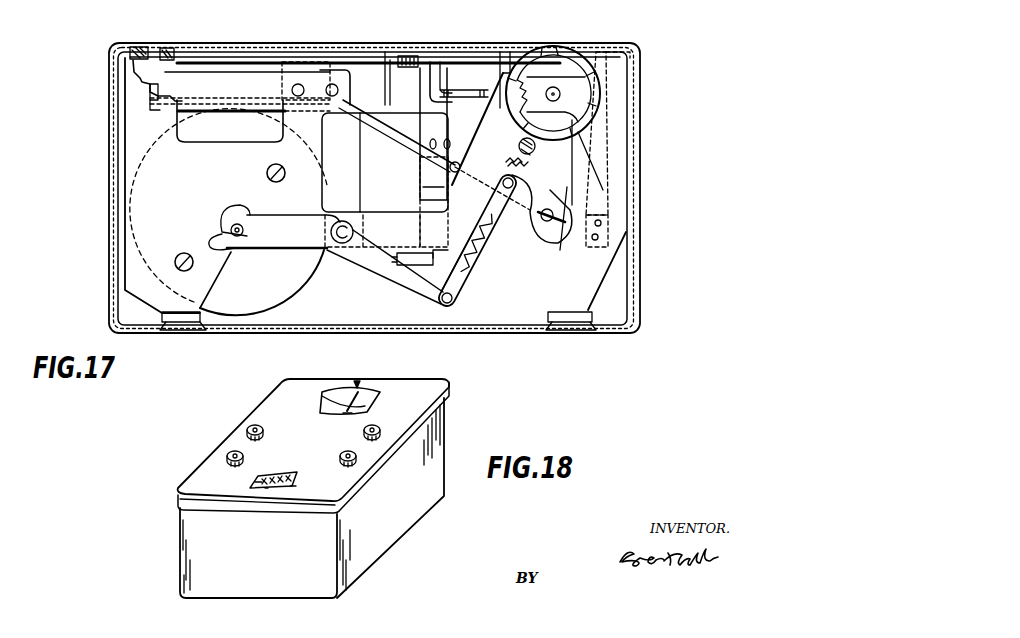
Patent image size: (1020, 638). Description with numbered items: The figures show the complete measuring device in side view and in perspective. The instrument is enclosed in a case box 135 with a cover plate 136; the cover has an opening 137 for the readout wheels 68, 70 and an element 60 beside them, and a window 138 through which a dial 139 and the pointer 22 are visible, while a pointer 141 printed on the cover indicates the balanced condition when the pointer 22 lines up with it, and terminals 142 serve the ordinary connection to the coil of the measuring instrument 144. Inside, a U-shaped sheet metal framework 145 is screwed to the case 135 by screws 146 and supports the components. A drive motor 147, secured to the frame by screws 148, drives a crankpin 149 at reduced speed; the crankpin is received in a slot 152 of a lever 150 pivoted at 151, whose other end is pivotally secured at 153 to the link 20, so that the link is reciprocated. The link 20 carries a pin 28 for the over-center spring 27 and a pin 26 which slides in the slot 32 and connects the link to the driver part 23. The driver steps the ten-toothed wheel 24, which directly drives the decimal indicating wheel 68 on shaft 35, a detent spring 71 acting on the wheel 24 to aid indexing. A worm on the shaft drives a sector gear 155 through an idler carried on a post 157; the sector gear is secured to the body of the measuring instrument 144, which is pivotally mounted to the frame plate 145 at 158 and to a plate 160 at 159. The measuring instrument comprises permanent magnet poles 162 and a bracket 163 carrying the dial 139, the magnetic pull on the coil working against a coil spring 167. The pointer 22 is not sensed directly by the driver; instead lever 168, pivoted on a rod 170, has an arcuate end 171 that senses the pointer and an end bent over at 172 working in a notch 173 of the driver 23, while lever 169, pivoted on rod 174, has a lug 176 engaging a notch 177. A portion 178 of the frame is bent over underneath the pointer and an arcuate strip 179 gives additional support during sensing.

In FIG. 17, the link 20 is at (462, 285).
In FIG. 17, the pointer 22 is at (214, 60).
In FIG. 18, the pointer 22 is at (349, 413).
In FIG. 17, the driver part 23 is at (535, 152).
In FIG. 17, the wheel 24 is at (568, 50).
In FIG. 17, the pin 26 is at (542, 210).
In FIG. 17, the over-center spring 27 is at (491, 234).
In FIG. 17, the pin 28 is at (476, 264).
In FIG. 17, the sensing corner 32 is at (514, 182).
In FIG. 17, the shaft 35 is at (559, 99).
In FIG. 18, the window 60 is at (270, 488).
In FIG. 18, the decimal indicating wheel 68 is at (292, 487).
In FIG. 18, the indicating wheel 70 is at (256, 480).
In FIG. 17, the detent spring 71 is at (612, 128).
In FIG. 17, the case box 135 is at (638, 201).
In FIG. 18, the case box 135 is at (415, 512).
In FIG. 17, the cover plate 136 is at (642, 50).
In FIG. 18, the cover plate 136 is at (450, 388).
In FIG. 18, the opening 137 is at (276, 474).
In FIG. 18, the window 138 is at (372, 388).
In FIG. 17, the dial 139 is at (134, 72).
In FIG. 18, the dial 139 is at (330, 392).
In FIG. 18, the pointer 141 is at (357, 380).
In FIG. 18, the terminals 142 is at (234, 452).
In FIG. 17, the measuring instrument 144 is at (438, 62).
In FIG. 17, the sheet metal framework 145 is at (625, 262).
In FIG. 17, the screws 146 is at (575, 326).
In FIG. 17, the drive motor 147 is at (285, 292).
In FIG. 17, the screws 148 is at (177, 256).
In FIG. 17, the crankpin 149 is at (226, 226).
In FIG. 17, the lever 150 is at (285, 225).
In FIG. 17, the pivot 151 is at (355, 232).
In FIG. 17, the slot 152 is at (212, 246).
In FIG. 17, the pivotal connection 153 is at (452, 301).
In FIG. 17, the sector gear 155 is at (470, 86).
In FIG. 17, the post 157 is at (504, 55).
In FIG. 17, the pivot pin 158 is at (408, 56).
In FIG. 17, the pivot pin 159 is at (412, 268).
In FIG. 17, the plate 160 is at (400, 262).
In FIG. 17, the permanent magnet poles 162 is at (362, 170).
In FIG. 17, the bracket 163 is at (422, 126).
In FIG. 17, the coil spring 167 is at (388, 52).
In FIG. 17, the lever 168 is at (222, 97).
In FIG. 17, the lever 169 is at (262, 110).
In FIG. 17, the rod 170 is at (299, 83).
In FIG. 17, the end 171 is at (150, 90).
In FIG. 17, the bent-over end 172 is at (454, 150).
In FIG. 17, the notch 173 is at (462, 172).
In FIG. 17, the rod 174 is at (337, 83).
In FIG. 17, the lug 176 is at (592, 241).
In FIG. 17, the notch 177 is at (542, 221).
In FIG. 17, the portion 178 is at (139, 47).
In FIG. 17, the arcuate strip 179 is at (176, 50).